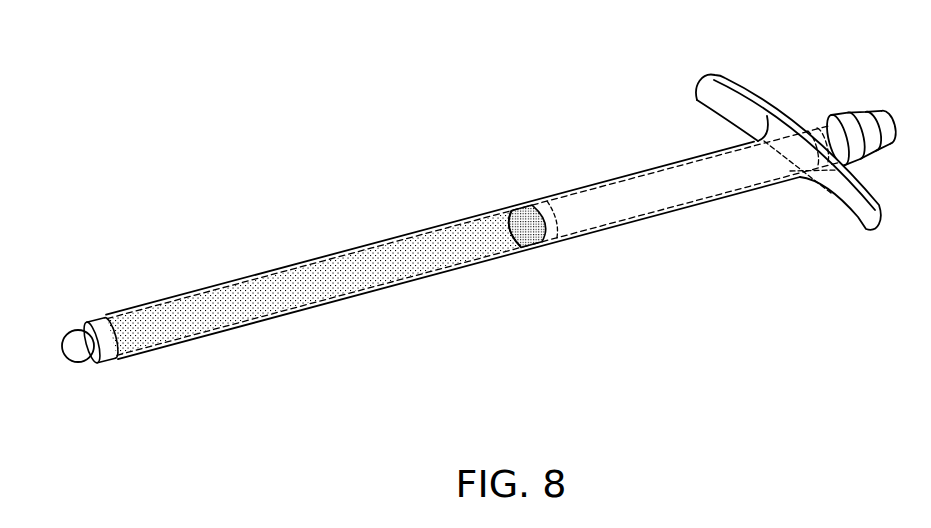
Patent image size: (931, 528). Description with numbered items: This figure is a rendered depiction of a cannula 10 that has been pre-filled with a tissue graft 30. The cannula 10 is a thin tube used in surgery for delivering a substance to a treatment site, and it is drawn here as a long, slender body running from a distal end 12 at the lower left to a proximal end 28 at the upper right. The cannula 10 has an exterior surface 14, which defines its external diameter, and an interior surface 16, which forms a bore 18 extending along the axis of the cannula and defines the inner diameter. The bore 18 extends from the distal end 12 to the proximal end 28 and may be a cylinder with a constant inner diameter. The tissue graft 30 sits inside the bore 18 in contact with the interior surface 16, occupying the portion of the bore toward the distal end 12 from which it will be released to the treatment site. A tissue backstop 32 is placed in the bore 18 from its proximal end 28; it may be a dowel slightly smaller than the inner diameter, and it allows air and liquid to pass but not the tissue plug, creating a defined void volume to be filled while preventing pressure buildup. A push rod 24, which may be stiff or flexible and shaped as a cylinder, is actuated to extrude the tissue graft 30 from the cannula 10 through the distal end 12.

The cannula 10 is at (459, 233).
The distal end 12 is at (74, 345).
The exterior surface 14 is at (623, 222).
The interior surface 16 is at (82, 363).
The bore 18 is at (72, 347).
The push rod 24 is at (665, 178).
The proximal end 28 is at (781, 150).
The tissue graft 30 is at (367, 260).
The tissue backstop 32 is at (527, 218).